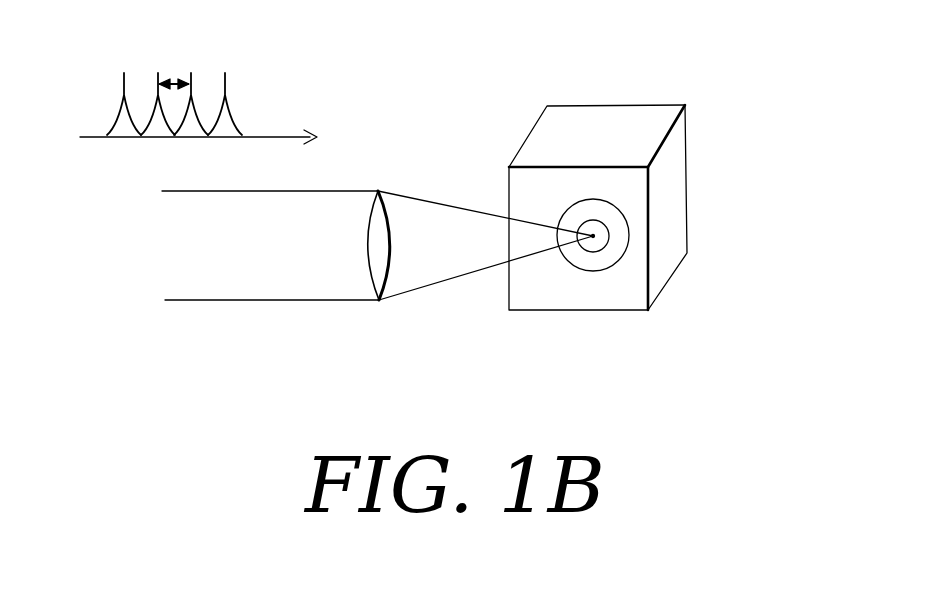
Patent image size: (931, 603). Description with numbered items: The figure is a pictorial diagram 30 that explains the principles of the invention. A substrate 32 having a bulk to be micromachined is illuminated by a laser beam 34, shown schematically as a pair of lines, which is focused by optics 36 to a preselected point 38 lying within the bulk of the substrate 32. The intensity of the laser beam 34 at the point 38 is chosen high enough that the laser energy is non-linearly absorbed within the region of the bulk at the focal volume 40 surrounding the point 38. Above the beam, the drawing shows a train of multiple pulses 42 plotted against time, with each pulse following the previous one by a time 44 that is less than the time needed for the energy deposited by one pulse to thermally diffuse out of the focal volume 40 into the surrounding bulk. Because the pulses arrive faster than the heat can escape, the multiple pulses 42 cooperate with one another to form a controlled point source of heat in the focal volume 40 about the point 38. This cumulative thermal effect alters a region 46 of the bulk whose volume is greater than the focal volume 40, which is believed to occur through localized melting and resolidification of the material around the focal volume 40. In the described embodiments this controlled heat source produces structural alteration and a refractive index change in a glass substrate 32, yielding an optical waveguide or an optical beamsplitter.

The pictorial diagram 30 is at (300, 330).
The substrate 32 is at (676, 226).
The laser beam 34 is at (238, 298).
The optics 36 is at (377, 207).
The preselected point 38 is at (589, 244).
The focal volume 40 is at (603, 220).
The multiple pulses 42 is at (233, 108).
The time between pulses 44 is at (177, 80).
The altered region 46 is at (607, 268).